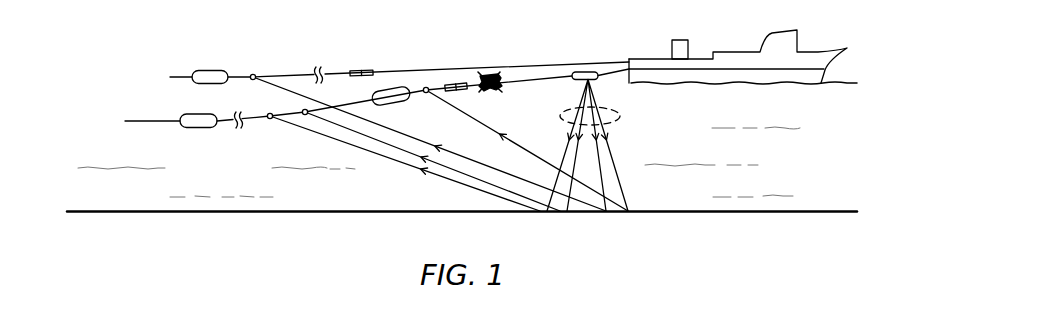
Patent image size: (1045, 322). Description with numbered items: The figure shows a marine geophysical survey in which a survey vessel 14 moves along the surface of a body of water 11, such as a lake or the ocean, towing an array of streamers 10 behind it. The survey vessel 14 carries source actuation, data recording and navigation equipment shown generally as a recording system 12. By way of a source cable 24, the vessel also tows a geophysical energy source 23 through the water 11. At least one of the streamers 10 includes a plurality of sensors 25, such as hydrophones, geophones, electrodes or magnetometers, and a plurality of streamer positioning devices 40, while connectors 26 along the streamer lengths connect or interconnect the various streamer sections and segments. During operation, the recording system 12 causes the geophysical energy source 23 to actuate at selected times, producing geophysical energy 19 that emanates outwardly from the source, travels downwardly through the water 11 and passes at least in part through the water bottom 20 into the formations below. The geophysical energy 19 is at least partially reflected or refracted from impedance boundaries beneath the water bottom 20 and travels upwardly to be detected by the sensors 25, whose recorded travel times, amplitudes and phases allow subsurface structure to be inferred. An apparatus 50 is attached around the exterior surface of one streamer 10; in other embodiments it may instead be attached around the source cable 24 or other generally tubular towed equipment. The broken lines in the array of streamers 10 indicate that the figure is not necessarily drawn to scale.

The streamers 10 is at (437, 90).
The body of water 11 is at (818, 105).
The recording system 12 is at (680, 40).
The survey vessel 14 is at (820, 52).
The geophysical energy 19 is at (610, 114).
The water bottom 20 is at (142, 212).
The geophysical energy source 23 is at (585, 72).
The source cable 24 is at (612, 76).
The sensors 25 is at (253, 74).
The connectors 26 is at (360, 71).
The streamer positioning devices 40 is at (206, 70).
The apparatus 50 is at (488, 70).